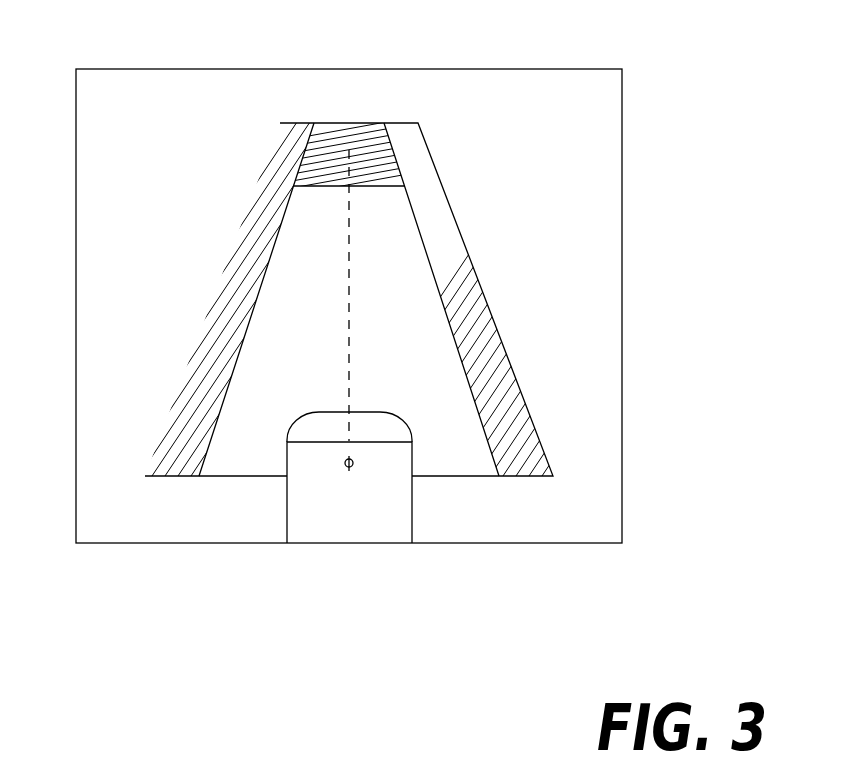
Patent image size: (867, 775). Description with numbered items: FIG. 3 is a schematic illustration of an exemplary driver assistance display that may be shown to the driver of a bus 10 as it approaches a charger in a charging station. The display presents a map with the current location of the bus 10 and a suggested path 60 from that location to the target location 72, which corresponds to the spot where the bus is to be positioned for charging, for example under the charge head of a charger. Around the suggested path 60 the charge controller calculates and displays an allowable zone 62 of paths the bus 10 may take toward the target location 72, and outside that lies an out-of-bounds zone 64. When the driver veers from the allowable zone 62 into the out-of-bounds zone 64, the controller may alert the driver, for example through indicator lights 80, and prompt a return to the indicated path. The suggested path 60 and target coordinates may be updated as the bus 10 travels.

The indicator lights 80 is at (150, 52).
The suggested path 60 is at (358, 242).
The target location 72 is at (376, 199).
The allowable zone 62 is at (291, 308).
The out-of-bounds zone 64 is at (493, 370).
The bus 10 is at (378, 482).